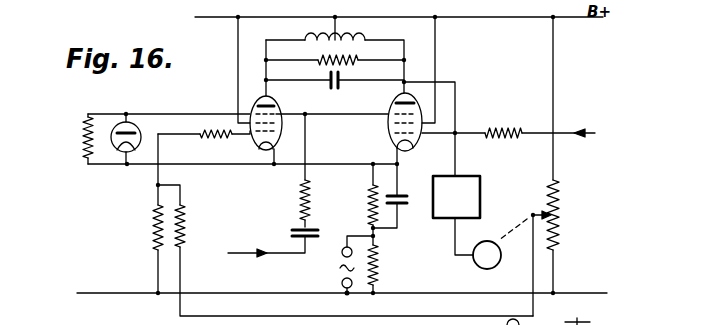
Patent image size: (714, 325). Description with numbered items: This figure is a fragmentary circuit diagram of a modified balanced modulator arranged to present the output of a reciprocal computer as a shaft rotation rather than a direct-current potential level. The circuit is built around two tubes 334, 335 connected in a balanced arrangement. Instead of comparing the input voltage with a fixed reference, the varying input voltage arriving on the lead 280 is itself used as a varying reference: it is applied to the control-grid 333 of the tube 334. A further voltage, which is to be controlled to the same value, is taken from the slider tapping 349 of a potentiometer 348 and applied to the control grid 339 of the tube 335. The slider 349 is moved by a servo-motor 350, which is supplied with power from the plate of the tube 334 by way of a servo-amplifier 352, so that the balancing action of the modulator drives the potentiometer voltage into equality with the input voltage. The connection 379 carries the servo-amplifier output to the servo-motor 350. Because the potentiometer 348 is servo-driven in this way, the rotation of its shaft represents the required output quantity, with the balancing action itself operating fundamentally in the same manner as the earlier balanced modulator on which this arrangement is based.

The tube 335 is at (274, 98).
The tube 334 is at (397, 95).
The control-grid 333 is at (394, 138).
The control grid 339 is at (256, 137).
The lead 280 is at (561, 116).
The servo-amplifier 352 is at (481, 178).
The servo amplifier output connection 379 is at (454, 226).
The servo-motor 350 is at (484, 268).
The slider tapping 349 is at (546, 213).
The potentiometer 348 is at (557, 216).